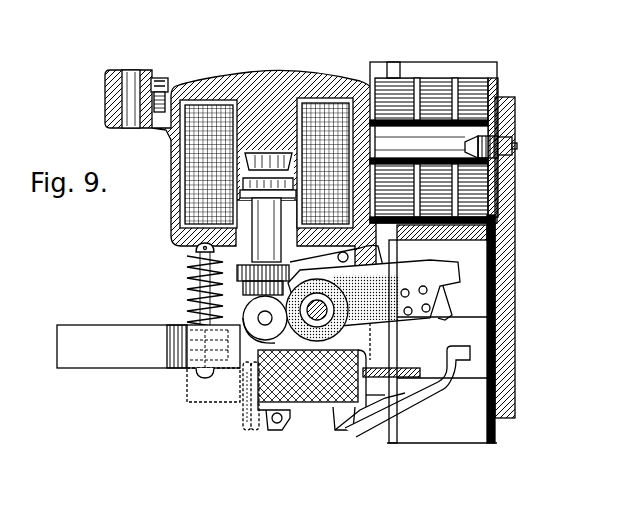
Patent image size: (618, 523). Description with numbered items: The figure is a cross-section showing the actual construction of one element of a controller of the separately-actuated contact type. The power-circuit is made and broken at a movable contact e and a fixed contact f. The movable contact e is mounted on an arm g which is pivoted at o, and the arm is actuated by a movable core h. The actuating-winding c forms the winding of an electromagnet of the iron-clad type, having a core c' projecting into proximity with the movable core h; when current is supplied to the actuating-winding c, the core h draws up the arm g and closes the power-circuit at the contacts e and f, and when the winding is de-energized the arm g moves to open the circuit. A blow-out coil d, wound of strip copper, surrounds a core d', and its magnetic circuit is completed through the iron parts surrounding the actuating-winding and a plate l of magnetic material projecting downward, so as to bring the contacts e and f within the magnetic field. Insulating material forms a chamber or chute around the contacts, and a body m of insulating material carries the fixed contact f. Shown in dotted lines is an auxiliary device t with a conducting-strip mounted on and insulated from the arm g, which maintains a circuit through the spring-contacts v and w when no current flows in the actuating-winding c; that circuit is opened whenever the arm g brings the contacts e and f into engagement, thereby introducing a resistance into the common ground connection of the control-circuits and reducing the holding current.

The actuating-winding c is at (266, 133).
The core c' is at (240, 152).
The blow-out coil d is at (434, 126).
The core d' is at (446, 94).
The plate l is at (515, 246).
The movable contact e is at (447, 309).
The core h is at (279, 260).
The pivot o is at (333, 279).
The arm g is at (107, 366).
The auxiliary device t is at (245, 402).
The spring-contact v is at (248, 432).
The spring-contact w is at (254, 432).
The body m is at (305, 389).
The fixed contact f is at (463, 362).